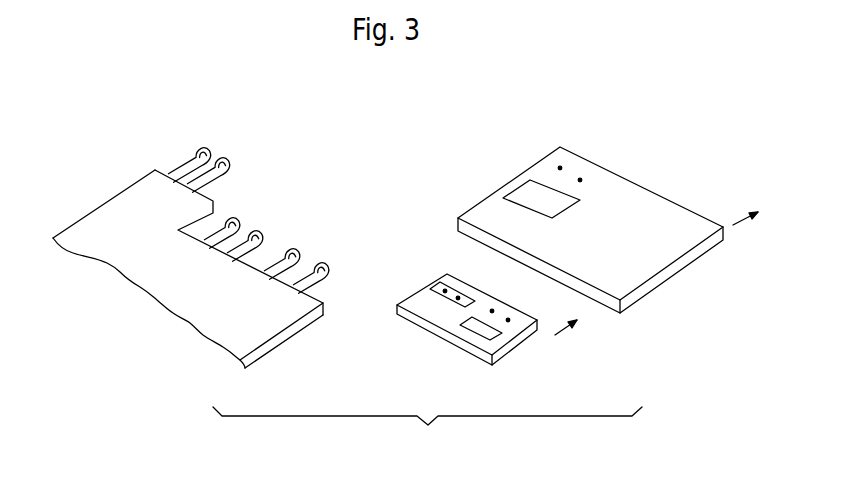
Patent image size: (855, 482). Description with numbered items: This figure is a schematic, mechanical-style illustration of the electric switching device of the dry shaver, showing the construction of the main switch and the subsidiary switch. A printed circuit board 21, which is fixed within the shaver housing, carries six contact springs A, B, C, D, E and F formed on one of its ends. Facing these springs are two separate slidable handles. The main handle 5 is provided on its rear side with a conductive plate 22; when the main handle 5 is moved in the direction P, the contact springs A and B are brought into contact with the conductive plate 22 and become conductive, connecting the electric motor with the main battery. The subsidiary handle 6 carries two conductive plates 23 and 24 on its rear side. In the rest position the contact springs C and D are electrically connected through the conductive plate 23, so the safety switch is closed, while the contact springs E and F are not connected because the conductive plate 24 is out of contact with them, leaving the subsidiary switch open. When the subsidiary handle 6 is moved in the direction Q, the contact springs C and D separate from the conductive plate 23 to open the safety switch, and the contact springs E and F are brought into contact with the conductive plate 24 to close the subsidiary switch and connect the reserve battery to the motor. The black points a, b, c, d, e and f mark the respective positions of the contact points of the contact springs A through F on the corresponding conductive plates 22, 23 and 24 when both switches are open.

The printed circuit board 21 is at (118, 205).
The contact spring A is at (215, 147).
The contact spring B is at (240, 166).
The contact spring C is at (245, 218).
The contact spring D is at (265, 230).
The contact spring E is at (295, 248).
The contact spring F is at (328, 260).
The main handle 5 is at (665, 223).
The conductive plate 22 is at (528, 192).
The contact point a is at (560, 168).
The contact point b is at (580, 180).
The direction of main handle movement P is at (747, 202).
The subsidiary handle 6 is at (527, 335).
The conductive plate 23 is at (443, 283).
The conductive plate 24 is at (472, 328).
The contact point c is at (445, 291).
The contact point d is at (458, 298).
The contact point e is at (492, 311).
The contact point f is at (508, 320).
The direction of subsidiary handle movement Q is at (576, 329).